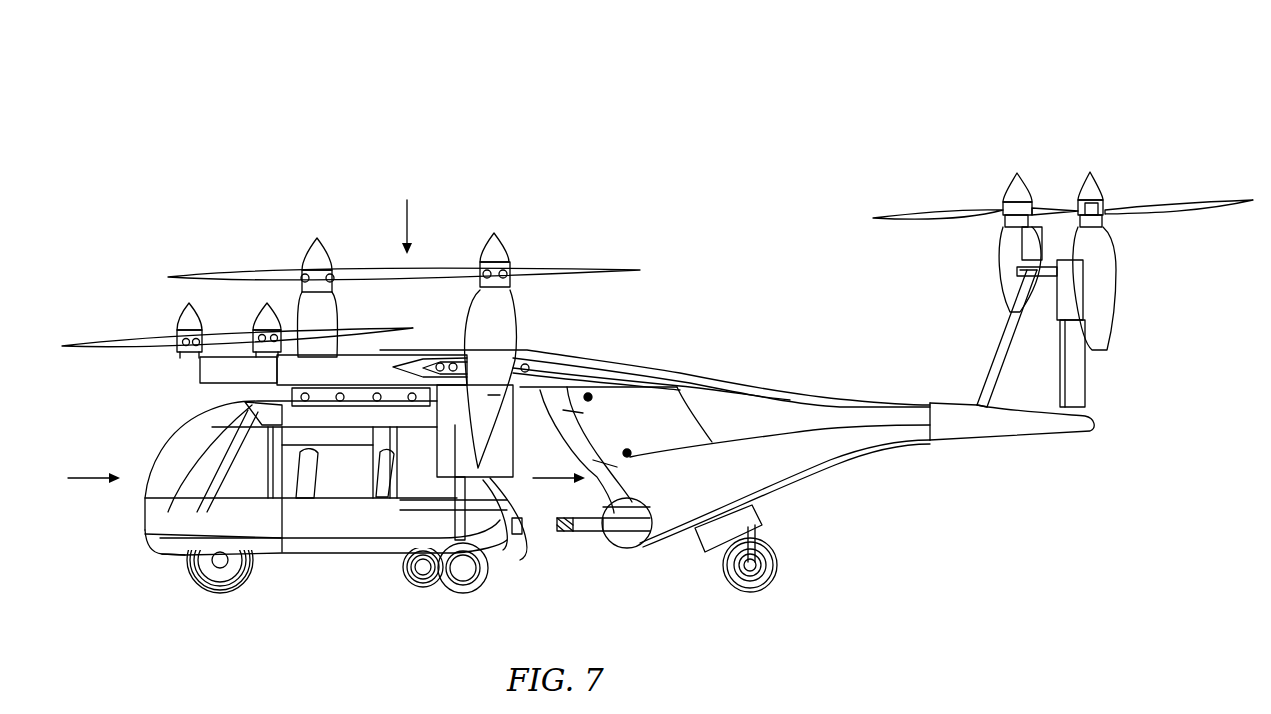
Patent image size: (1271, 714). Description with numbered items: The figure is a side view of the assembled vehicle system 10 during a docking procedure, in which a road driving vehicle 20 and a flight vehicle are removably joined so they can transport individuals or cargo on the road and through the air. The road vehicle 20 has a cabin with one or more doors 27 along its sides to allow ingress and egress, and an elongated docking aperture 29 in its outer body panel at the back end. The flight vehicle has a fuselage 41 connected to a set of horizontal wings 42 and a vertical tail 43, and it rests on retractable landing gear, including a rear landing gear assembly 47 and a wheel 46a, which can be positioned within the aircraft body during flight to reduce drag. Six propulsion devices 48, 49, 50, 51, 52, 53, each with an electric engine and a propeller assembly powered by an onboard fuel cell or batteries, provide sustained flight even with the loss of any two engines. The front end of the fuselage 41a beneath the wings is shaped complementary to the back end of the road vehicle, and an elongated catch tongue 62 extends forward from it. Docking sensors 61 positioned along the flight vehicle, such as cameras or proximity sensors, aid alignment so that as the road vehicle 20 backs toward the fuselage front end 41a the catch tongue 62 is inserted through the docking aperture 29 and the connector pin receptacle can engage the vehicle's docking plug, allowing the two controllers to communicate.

The assembled vehicle system 10 is at (62, 125).
The road driving vehicle 20 is at (170, 429).
The door 27 is at (152, 508).
The docking aperture 29 is at (523, 540).
The fuselage 41 is at (733, 490).
The front end of the fuselage 41a is at (618, 542).
The horizontal wings 42 is at (568, 346).
The vertical tail 43 is at (1021, 392).
The wheel 46a is at (455, 592).
The landing gear assembly 47 is at (792, 576).
The propulsion device 48 is at (322, 212).
The propulsion device 49 is at (168, 316).
The propulsion device 50 is at (246, 302).
The propulsion device 51 is at (513, 222).
The propulsion device 52 is at (1032, 162).
The propulsion device 53 is at (1114, 162).
The docking sensor 61 is at (594, 397).
The catch tongue 62 is at (582, 527).